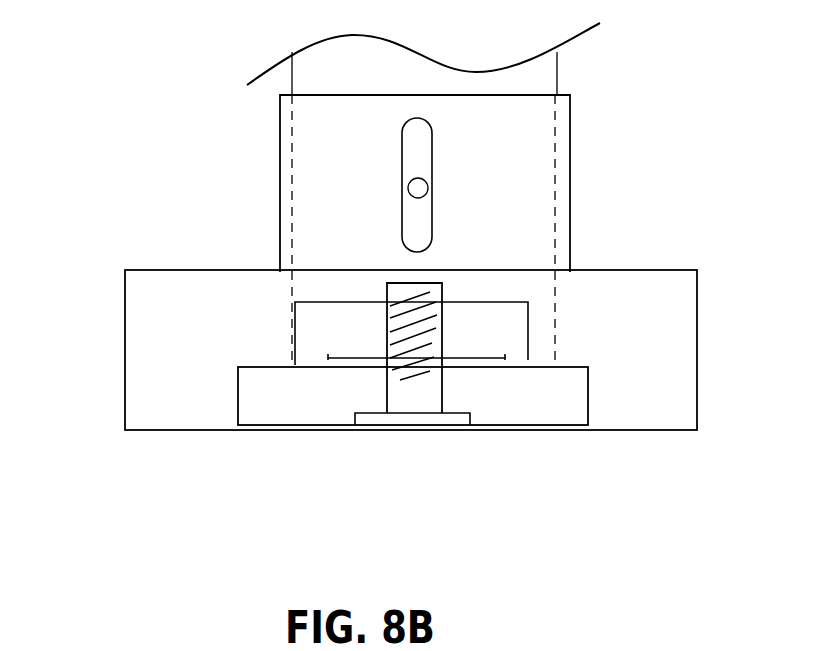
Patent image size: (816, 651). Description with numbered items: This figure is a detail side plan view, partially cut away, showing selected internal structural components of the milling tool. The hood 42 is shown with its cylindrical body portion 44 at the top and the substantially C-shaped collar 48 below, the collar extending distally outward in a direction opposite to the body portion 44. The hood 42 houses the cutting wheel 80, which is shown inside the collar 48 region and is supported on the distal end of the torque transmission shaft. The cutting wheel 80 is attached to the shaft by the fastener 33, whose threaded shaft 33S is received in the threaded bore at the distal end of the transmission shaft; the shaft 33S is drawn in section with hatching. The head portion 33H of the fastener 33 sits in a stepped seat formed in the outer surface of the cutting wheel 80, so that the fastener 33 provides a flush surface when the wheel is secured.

The hood 42 is at (608, 207).
The cylindrical body portion 44 is at (280, 181).
The C-shaped collar 48 is at (124, 347).
The fastener 33 is at (384, 385).
The threaded shaft 33S is at (442, 333).
The cutting wheel 80 is at (594, 396).
The head portion 33H is at (473, 415).